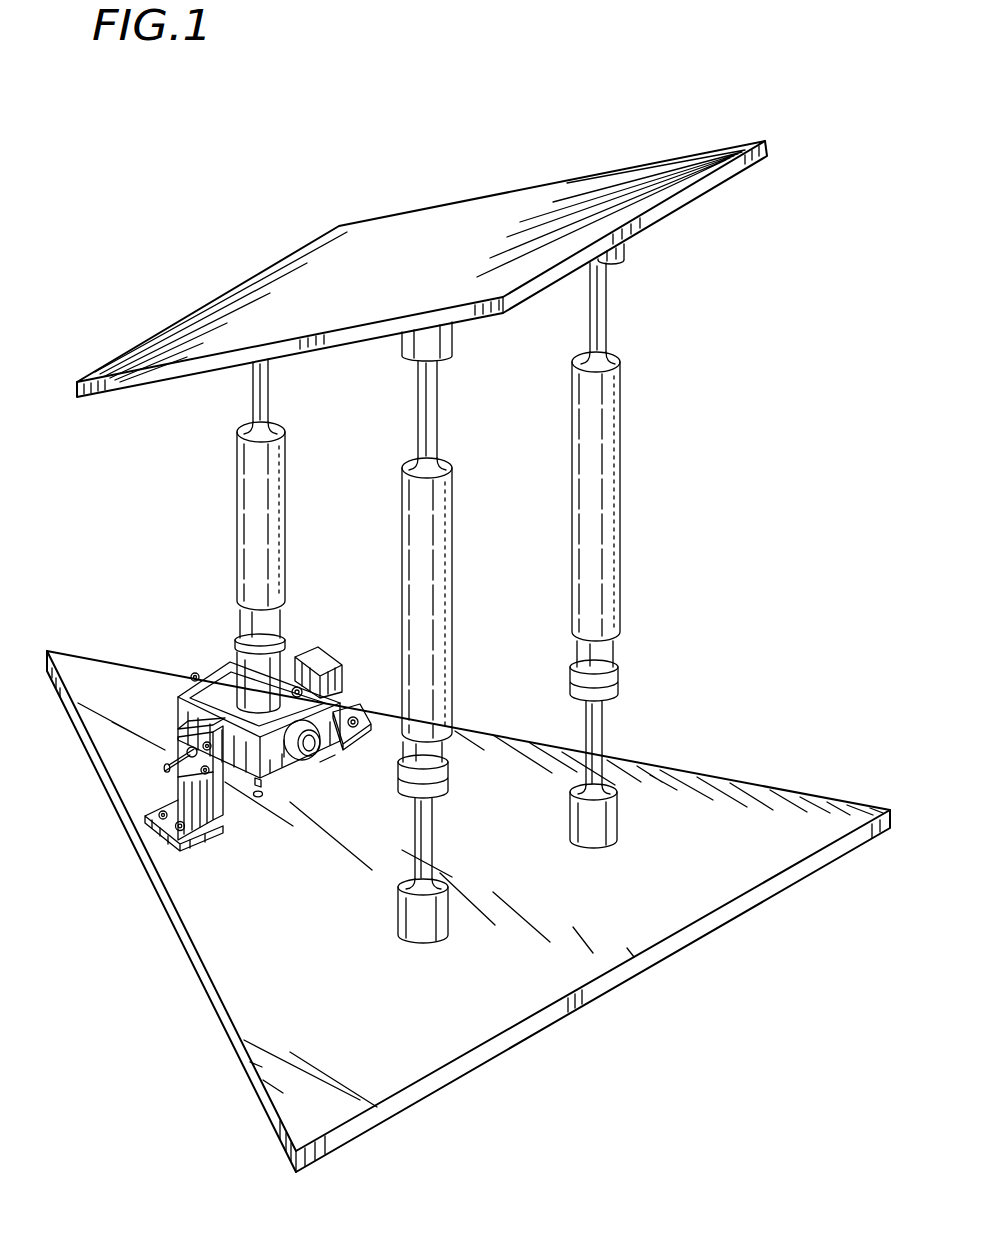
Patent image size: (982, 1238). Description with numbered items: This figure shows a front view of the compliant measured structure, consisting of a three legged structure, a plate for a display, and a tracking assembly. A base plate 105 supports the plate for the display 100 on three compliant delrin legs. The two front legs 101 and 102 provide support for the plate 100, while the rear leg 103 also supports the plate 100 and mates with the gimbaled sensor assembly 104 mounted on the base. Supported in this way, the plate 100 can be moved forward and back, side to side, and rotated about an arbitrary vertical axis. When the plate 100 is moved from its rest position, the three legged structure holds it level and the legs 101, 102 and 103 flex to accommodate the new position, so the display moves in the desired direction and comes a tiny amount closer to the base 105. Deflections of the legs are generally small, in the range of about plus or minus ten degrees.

The plate for the display 100 is at (211, 303).
The front leg 101 is at (608, 468).
The front leg 102 is at (412, 562).
The rear leg 103 is at (248, 522).
The gimbaled sensor assembly 104 is at (210, 839).
The base plate 105 is at (592, 1000).